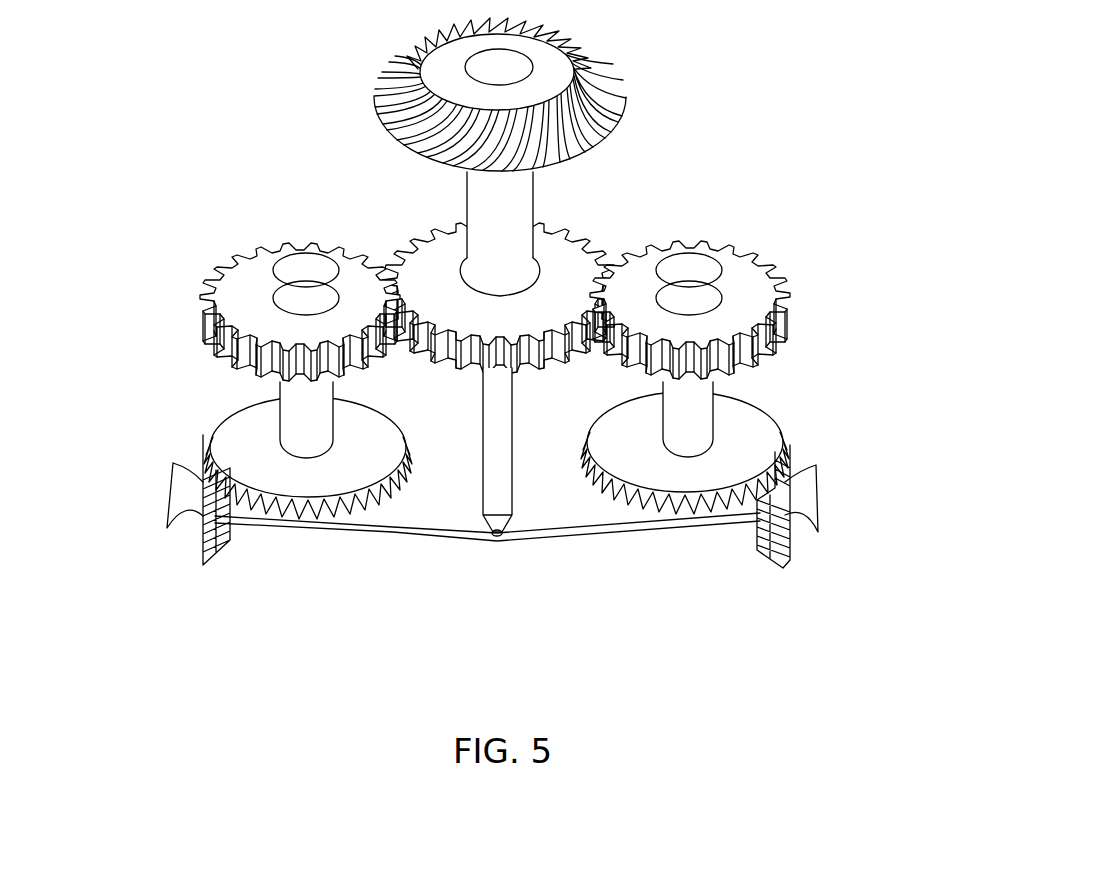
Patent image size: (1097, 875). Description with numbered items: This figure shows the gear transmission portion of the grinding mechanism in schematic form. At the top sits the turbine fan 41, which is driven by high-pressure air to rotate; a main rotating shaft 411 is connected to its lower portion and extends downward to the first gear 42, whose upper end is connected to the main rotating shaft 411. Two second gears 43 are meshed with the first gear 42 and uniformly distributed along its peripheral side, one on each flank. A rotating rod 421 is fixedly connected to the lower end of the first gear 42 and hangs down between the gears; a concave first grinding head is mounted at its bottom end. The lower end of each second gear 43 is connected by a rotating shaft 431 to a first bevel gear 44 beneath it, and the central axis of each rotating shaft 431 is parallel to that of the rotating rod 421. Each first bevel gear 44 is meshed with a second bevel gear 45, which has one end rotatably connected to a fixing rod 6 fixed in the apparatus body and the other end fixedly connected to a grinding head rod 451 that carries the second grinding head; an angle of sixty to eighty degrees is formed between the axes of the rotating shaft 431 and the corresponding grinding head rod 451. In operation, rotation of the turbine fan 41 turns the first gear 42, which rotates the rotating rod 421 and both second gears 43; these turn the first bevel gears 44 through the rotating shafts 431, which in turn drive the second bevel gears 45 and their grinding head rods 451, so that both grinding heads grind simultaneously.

The turbine fan 41 is at (570, 68).
The main rotating shaft 411 is at (501, 222).
The first gear 42 is at (559, 283).
The second gear 43 is at (749, 293).
The first bevel gear 44 is at (367, 446).
The rotating shaft 431 is at (305, 418).
The rotating rod 421 is at (497, 402).
The second bevel gear 45 is at (780, 527).
The grinding head rod 451 is at (388, 530).
The fixing rod 6 is at (805, 498).